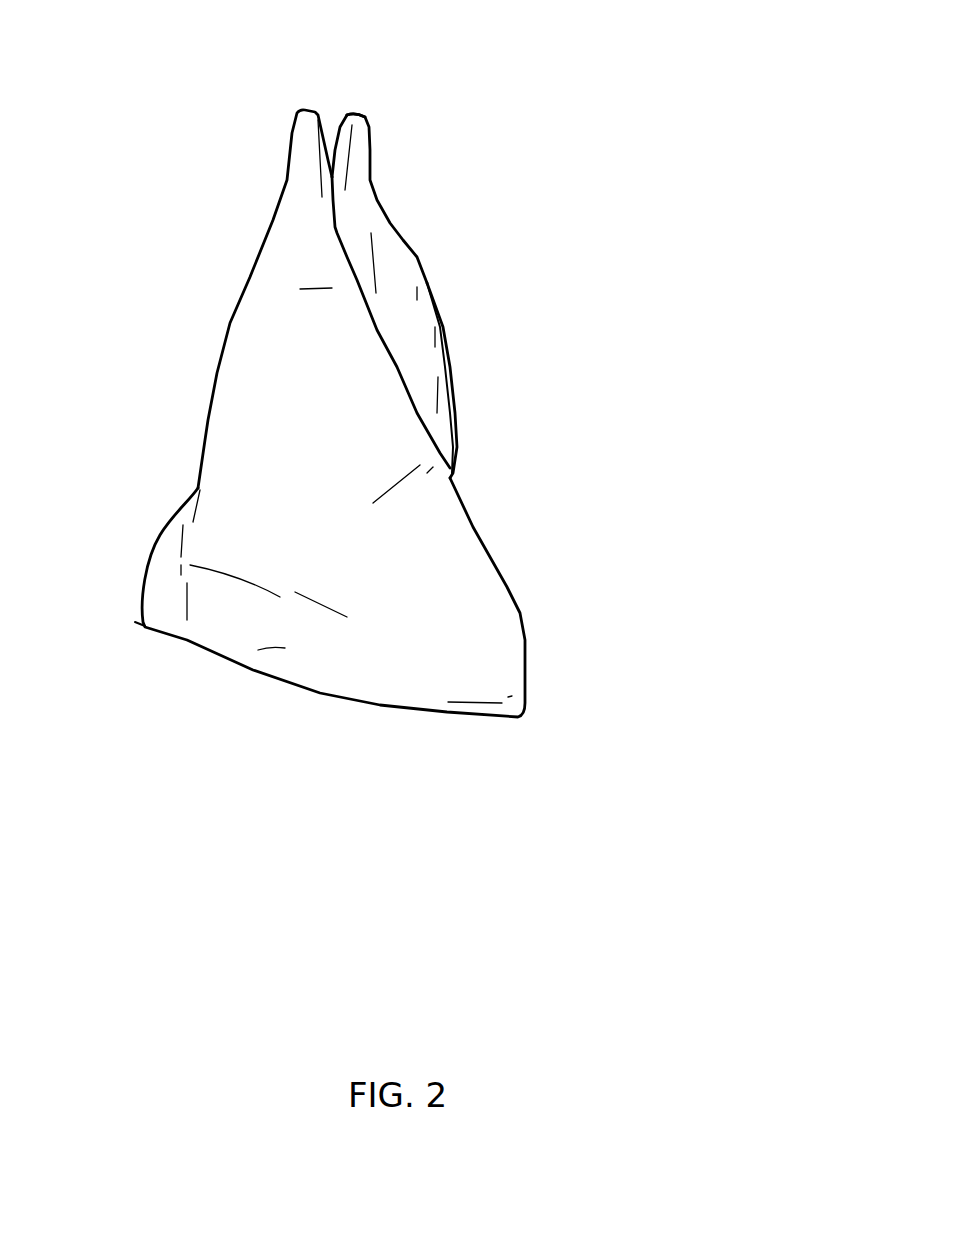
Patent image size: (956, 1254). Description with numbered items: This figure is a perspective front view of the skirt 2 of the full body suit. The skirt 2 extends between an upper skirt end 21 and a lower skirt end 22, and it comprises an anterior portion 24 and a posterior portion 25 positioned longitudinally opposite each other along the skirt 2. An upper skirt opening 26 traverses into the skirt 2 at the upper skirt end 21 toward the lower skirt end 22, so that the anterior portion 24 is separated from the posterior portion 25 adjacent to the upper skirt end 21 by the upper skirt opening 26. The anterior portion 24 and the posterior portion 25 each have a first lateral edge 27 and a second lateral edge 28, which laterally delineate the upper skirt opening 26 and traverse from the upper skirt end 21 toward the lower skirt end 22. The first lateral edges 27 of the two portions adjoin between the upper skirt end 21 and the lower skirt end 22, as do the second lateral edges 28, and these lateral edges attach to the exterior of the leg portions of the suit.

The skirt 2 is at (603, 308).
The upper skirt end 21 is at (238, 83).
The lower skirt end 22 is at (550, 738).
The anterior portion 24 is at (295, 197).
The posterior portion 25 is at (358, 167).
The upper skirt opening 26 is at (358, 135).
The first lateral edge 27 is at (380, 337).
The second lateral edge 28 is at (337, 127).